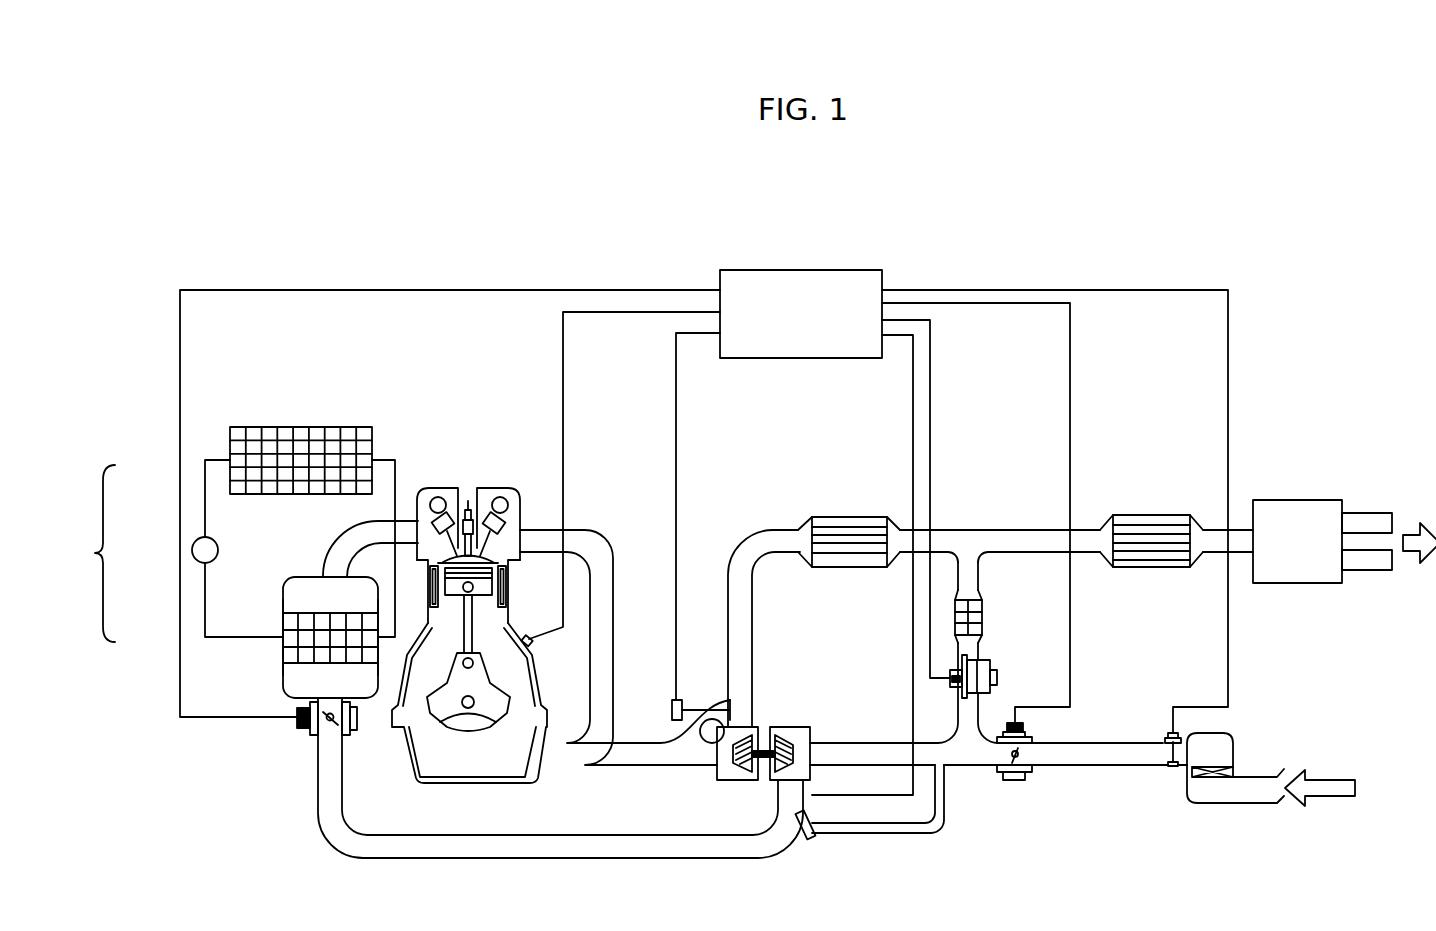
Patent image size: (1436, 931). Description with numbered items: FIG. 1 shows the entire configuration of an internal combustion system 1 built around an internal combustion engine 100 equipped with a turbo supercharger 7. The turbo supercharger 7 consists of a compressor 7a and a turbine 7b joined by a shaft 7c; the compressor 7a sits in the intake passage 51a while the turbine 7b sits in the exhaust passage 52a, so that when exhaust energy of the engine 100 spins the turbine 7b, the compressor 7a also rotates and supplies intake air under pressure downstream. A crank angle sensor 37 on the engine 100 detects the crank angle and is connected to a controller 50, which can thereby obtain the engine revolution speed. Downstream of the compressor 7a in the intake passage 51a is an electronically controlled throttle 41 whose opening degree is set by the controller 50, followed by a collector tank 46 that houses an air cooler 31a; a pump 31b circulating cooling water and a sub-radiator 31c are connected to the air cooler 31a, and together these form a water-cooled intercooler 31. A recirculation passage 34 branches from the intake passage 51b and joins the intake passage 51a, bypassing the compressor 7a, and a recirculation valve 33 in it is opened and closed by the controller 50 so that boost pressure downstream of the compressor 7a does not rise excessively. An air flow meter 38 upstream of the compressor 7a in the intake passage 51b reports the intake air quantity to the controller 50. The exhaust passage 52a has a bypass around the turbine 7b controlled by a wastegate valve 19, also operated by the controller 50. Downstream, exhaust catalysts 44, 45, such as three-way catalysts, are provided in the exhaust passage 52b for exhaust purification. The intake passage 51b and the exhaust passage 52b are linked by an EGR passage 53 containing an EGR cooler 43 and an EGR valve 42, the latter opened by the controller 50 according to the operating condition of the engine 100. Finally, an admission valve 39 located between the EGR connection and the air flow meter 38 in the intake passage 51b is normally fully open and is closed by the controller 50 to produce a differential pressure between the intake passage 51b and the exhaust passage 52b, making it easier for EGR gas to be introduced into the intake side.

The engine system 1 is at (1272, 322).
The controller 50 is at (821, 270).
The internal combustion engine 100 is at (488, 473).
The crank angle sensor 37 is at (529, 636).
The cooling circuit 31 is at (231, 562).
The air cooler 31a is at (283, 652).
The pump 31b is at (192, 550).
The sub-radiator 31c is at (228, 450).
The collector tank 46 is at (293, 676).
The electronically controlled throttle 41 is at (298, 736).
The intake passage 51a is at (337, 554).
The intake passage 51b is at (1102, 773).
The exhaust passage 52a is at (598, 533).
The exhaust passage 52b is at (753, 548).
The turbo supercharger 7 is at (789, 706).
The compressor 7a is at (811, 737).
The turbine 7b is at (741, 733).
The shaft 7c is at (766, 749).
The wastegate valve 19 is at (729, 702).
The exhaust catalyst 44 is at (848, 517).
The exhaust catalyst 45 is at (1148, 515).
The EGR passage 53 is at (975, 578).
The EGR cooler 43 is at (984, 620).
The EGR valve 42 is at (997, 677).
The recirculation passage 34 is at (880, 834).
The recirculation valve 33 is at (800, 846).
The admission valve 39 is at (1013, 781).
The air flow meter 38 is at (1172, 771).